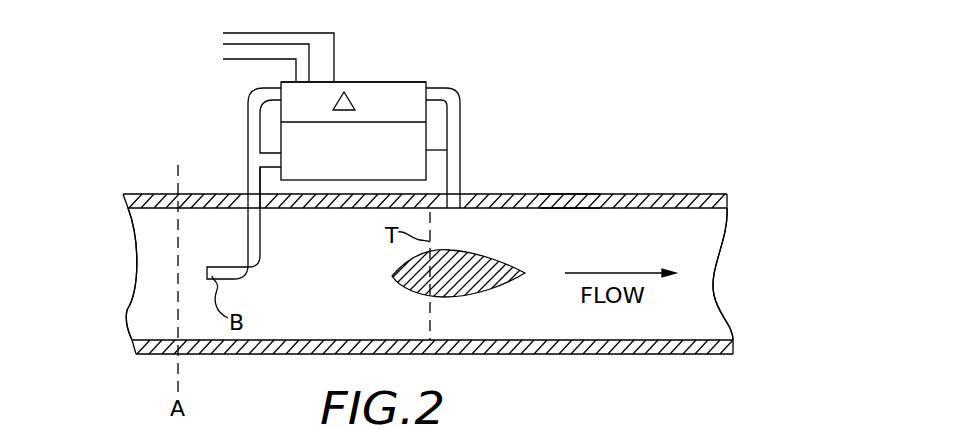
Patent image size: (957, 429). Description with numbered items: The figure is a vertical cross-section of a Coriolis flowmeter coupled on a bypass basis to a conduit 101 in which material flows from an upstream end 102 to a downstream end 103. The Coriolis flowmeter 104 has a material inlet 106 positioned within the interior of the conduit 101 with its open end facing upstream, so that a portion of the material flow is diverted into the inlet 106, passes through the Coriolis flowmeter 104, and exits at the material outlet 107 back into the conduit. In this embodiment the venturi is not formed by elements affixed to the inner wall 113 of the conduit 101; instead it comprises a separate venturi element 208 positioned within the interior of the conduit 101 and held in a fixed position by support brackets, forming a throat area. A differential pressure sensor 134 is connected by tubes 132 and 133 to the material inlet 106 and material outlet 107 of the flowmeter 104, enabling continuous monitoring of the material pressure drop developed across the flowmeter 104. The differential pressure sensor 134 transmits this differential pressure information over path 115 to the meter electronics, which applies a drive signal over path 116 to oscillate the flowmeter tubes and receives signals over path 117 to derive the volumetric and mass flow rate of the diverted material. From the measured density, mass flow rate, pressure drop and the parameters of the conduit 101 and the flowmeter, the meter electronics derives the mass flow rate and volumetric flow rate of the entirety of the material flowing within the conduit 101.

The conduit 101 is at (633, 194).
The upstream end 102 is at (133, 278).
The downstream end 103 is at (717, 298).
The Coriolis flowmeter 104 is at (428, 128).
The material inlet 106 is at (261, 252).
The material outlet 107 is at (428, 148).
The inner wall 113 is at (563, 209).
The path 115 is at (334, 46).
The path 116 is at (309, 70).
The path 117 is at (253, 60).
The tube 132 is at (247, 118).
The tube 133 is at (460, 104).
The differential pressure sensor 134 is at (428, 82).
The venturi element 208 is at (396, 282).